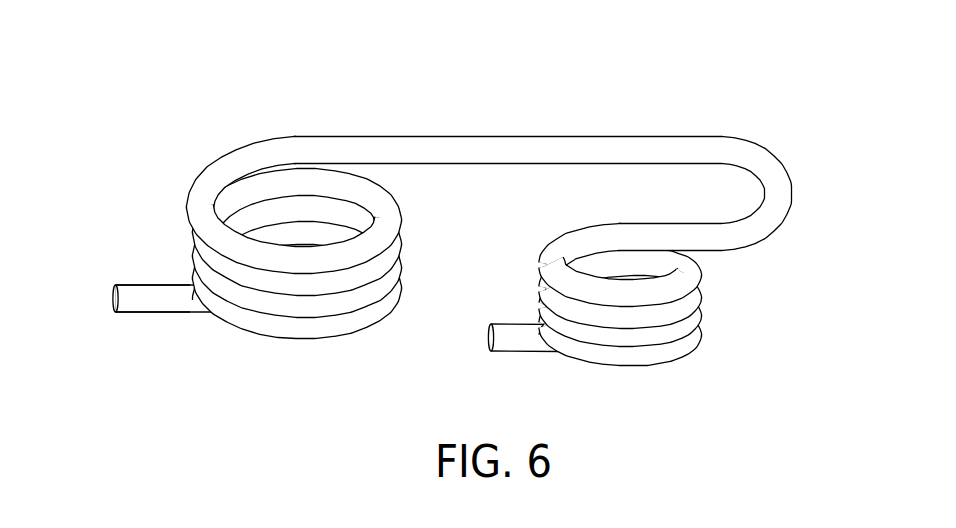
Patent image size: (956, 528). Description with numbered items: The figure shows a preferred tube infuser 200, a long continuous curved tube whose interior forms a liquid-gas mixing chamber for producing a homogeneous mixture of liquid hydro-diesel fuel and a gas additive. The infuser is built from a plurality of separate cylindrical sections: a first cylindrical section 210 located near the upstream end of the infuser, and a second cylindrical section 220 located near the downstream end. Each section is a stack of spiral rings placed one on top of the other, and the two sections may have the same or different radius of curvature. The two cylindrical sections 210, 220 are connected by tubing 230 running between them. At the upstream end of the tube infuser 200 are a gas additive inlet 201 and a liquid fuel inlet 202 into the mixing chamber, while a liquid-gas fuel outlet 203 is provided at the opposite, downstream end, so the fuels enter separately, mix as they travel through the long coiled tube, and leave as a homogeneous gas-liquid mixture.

The tube infuser 200 is at (415, 207).
The gas additive inlet 201 is at (100, 292).
The liquid fuel inlet 202 is at (100, 307).
The liquid-gas fuel outlet 203 is at (487, 332).
The first cylindrical section 210 is at (297, 157).
The second cylindrical section 220 is at (690, 268).
The tubing 230 is at (432, 148).